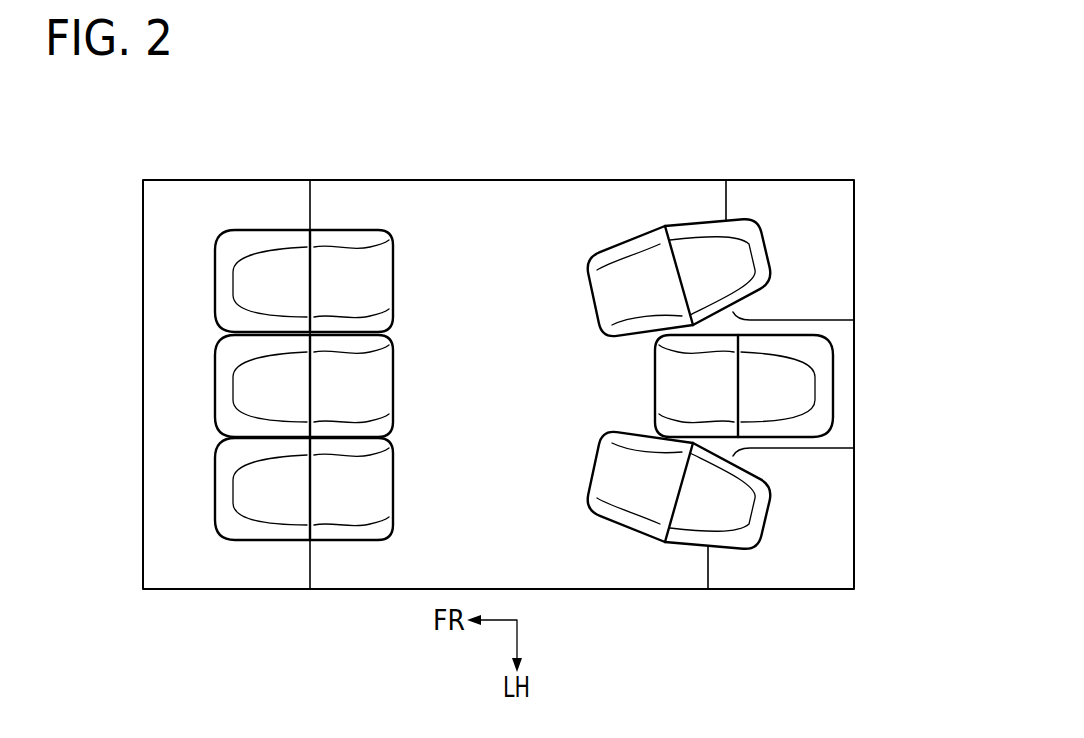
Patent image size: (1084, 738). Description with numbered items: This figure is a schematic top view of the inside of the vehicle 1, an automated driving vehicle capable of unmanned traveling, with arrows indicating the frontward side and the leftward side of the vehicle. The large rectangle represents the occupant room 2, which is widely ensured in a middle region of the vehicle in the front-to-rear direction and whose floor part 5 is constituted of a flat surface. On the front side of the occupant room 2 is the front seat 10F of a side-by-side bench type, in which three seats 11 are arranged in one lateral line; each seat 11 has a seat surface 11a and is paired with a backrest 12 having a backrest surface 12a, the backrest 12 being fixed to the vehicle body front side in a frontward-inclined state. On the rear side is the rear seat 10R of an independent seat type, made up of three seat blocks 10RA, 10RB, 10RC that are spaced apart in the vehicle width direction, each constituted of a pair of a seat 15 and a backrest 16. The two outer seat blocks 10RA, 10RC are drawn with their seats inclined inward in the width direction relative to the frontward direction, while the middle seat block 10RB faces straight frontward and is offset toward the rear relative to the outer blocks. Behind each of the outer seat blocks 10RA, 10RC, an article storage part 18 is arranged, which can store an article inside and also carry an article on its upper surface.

The vehicle 1 is at (688, 158).
The occupant room 2 is at (483, 228).
The floor part 5 is at (552, 563).
The front seat 10F is at (240, 379).
The rear seat 10R is at (760, 378).
The seat block 10RA is at (762, 242).
The seat block 10RB is at (832, 383).
The seat block 10RC is at (768, 520).
The seat 11 is at (339, 393).
The seat surface 11a is at (327, 260).
The backrest 12 is at (197, 393).
The backrest surface 12a is at (252, 267).
The seat 15 is at (668, 383).
The backrest 16 is at (740, 273).
The article storage part 18 is at (803, 198).